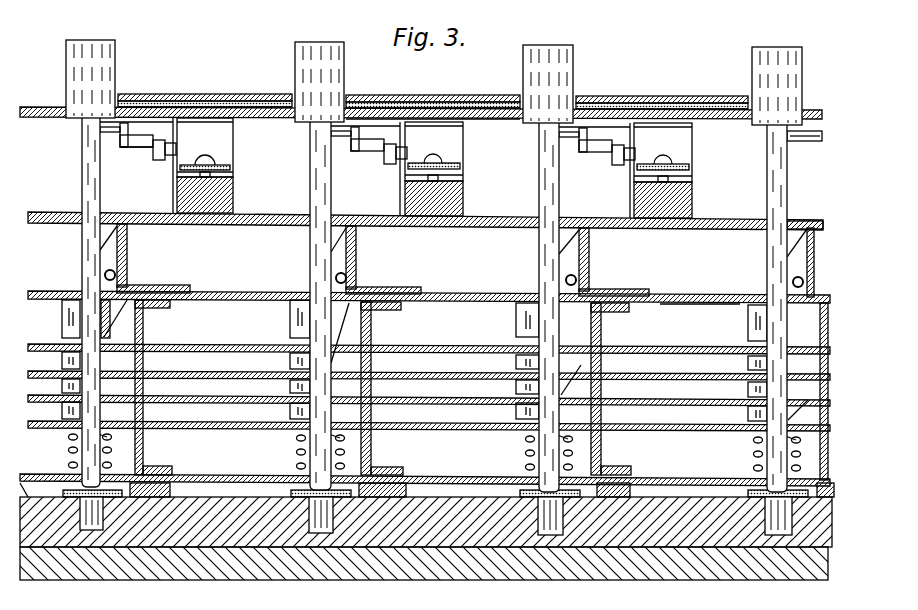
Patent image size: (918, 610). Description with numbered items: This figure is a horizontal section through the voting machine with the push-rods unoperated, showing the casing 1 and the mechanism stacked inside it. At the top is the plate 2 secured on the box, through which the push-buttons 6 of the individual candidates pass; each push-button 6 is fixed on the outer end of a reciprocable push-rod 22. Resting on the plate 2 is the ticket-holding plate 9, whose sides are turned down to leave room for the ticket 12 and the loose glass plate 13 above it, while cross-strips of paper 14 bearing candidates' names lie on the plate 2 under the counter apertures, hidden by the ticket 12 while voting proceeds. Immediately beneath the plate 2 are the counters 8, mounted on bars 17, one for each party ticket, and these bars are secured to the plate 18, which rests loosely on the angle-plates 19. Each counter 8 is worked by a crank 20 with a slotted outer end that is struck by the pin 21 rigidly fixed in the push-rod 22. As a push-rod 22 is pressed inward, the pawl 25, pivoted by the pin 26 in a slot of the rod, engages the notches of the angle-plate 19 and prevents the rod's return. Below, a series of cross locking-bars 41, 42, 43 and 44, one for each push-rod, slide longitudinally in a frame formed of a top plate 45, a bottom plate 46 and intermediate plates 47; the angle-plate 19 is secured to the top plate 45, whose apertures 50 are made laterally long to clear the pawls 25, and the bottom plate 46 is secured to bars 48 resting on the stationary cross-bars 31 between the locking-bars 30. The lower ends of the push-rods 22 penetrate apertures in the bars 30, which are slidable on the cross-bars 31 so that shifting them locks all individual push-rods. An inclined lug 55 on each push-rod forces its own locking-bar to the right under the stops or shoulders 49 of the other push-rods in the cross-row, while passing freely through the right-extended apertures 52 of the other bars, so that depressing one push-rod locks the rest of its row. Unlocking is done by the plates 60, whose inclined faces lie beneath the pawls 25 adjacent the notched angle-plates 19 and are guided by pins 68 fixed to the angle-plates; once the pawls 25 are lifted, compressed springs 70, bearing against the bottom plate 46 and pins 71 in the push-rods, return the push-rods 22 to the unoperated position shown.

The box or casing 1 is at (648, 580).
The plate 2 is at (735, 120).
The push-button 6 is at (115, 58).
The counter 8 is at (434, 150).
The ticket-holding plate 9 is at (290, 96).
The ticket 12 is at (489, 102).
The loose glass plate 13 is at (456, 98).
The cross-strips of paper 14 is at (495, 120).
The bar 17 is at (434, 197).
The plate 18 is at (730, 213).
The angle-plate 19 is at (127, 240).
The crank 20 is at (612, 155).
The pin 21 is at (111, 139).
The push-rod 22 is at (82, 164).
The pawl 25 is at (110, 212).
The pin 26 is at (88, 253).
The bar 30 is at (427, 503).
The stationary cross-bar 31 is at (426, 522).
The cross locking-bar 41 is at (408, 345).
The cross locking-bar 42 is at (418, 373).
The cross locking-bar 43 is at (430, 398).
The cross locking-bar 44 is at (450, 424).
The top plate 45 is at (692, 306).
The bottom plate 46 is at (686, 479).
The intermediate plate 47 is at (143, 323).
The bar 48 is at (403, 497).
The stop or shoulder 49 is at (62, 359).
The aperture 50 is at (566, 281).
The aperture 52 is at (516, 335).
The inclined lug 55 is at (454, 360).
The plate 60 is at (356, 261).
The pin 68 is at (130, 288).
The spring 70 is at (69, 450).
The pin 71 is at (97, 432).